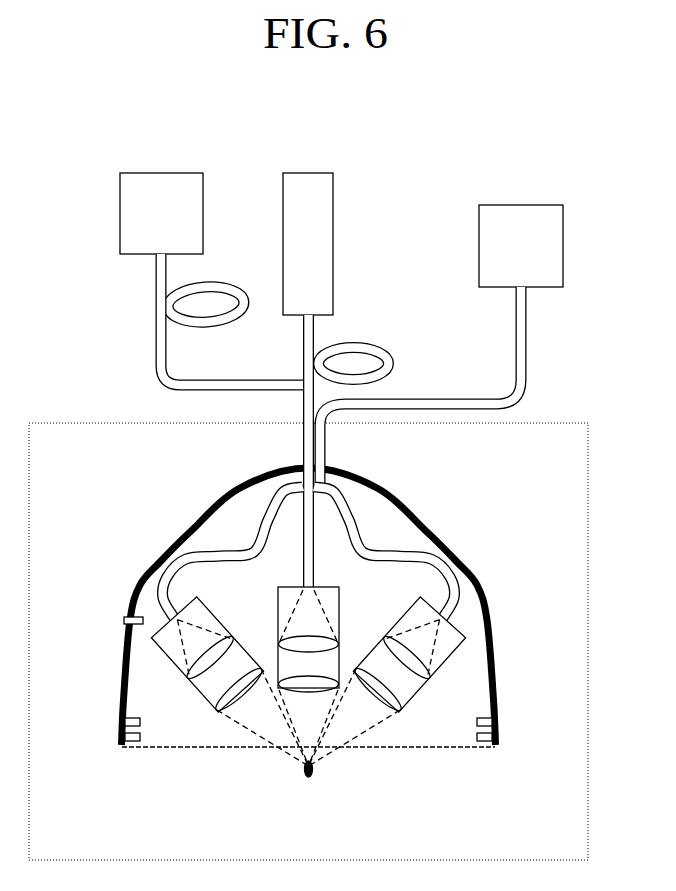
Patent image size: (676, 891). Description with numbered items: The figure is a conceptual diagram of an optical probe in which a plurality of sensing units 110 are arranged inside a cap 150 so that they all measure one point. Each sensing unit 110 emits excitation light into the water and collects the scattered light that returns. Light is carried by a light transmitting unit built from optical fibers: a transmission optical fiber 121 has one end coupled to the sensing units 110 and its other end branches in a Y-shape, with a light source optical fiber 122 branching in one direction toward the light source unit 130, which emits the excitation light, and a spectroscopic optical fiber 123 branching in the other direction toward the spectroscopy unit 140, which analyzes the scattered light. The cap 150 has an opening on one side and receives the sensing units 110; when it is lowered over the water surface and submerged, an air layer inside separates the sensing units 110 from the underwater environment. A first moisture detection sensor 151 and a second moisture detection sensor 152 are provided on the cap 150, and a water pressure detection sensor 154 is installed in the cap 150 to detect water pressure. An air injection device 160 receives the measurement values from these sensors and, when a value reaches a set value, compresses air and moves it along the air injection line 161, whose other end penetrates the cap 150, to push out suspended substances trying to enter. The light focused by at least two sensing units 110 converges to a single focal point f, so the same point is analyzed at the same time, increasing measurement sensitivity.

The sensing unit 110 is at (330, 625).
The transmission optical fiber 121 is at (300, 418).
The light source optical fiber 122 is at (158, 341).
The spectroscopic optical fiber 123 is at (387, 346).
The light source unit 130 is at (160, 190).
The spectroscopy unit 140 is at (305, 192).
The cap 150 is at (187, 520).
The first moisture detection sensor 151 is at (125, 737).
The second moisture detection sensor 152 is at (125, 721).
The water pressure detection sensor 154 is at (124, 620).
The air injection device 160 is at (520, 222).
The air injection line 161 is at (522, 333).
The focal point f is at (308, 778).